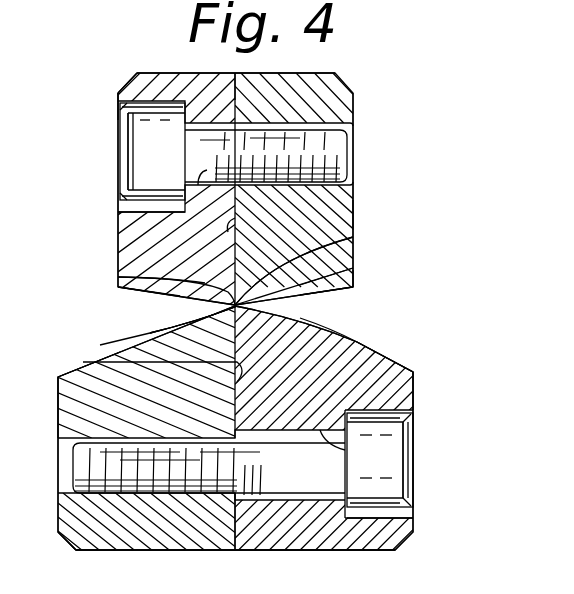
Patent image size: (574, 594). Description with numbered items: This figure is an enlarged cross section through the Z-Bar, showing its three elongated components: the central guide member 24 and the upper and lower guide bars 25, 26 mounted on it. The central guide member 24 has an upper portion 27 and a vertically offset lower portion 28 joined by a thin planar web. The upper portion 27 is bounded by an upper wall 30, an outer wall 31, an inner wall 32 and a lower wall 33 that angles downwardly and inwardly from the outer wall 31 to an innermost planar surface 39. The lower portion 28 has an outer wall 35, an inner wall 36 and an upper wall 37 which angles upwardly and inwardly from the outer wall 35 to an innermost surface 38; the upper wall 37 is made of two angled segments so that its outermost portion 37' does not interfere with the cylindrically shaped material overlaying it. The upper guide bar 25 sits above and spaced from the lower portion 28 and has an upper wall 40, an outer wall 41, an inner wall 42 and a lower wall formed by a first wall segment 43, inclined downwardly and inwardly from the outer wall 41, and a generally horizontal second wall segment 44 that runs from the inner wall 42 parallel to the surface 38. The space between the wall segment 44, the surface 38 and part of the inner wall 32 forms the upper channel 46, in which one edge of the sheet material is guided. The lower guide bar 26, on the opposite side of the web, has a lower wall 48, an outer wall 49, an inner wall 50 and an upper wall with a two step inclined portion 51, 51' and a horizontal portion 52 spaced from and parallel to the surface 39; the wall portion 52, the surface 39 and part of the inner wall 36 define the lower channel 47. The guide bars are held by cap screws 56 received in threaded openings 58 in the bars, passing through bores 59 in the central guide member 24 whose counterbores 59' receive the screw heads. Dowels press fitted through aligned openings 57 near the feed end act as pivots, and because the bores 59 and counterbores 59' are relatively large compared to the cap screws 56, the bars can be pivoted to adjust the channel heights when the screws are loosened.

The central guide member 24 is at (105, 237).
The upper guide bar 25 is at (353, 100).
The lower guide bar 26 is at (95, 548).
The upper portion 27 is at (126, 72).
The lower portion 28 is at (285, 548).
The upper wall 30 is at (182, 72).
The outer wall 31 is at (118, 100).
The inner wall 32 is at (233, 92).
The lower wall 33 is at (118, 288).
The outer wall 35 is at (58, 377).
The inner wall 36 is at (228, 548).
The upper wall 37 is at (199, 217).
The outermost portion 37' is at (399, 352).
The innermost surface 38 is at (353, 268).
The innermost planar surface 39 is at (118, 276).
The upper wall 40 is at (322, 58).
The outer wall 41 is at (353, 213).
The inner wall 42 is at (235, 218).
The first wall segment 43 is at (341, 289).
The second wall segment 44 is at (353, 238).
The upper channel 46 is at (242, 305).
The lower channel 47 is at (225, 305).
The lower wall 48 is at (145, 550).
The outer wall 49 is at (58, 398).
The inner wall 50 is at (83, 362).
The inclined portion 51 is at (173, 318).
The inclined portion 51' is at (98, 329).
The horizontal portion 52 is at (150, 333).
The cap screw 56 is at (145, 145).
The opening 57 is at (0, 508).
The threaded opening 58 is at (353, 148).
The bore 59 is at (263, 305).
The counterbore 59' is at (263, 360).